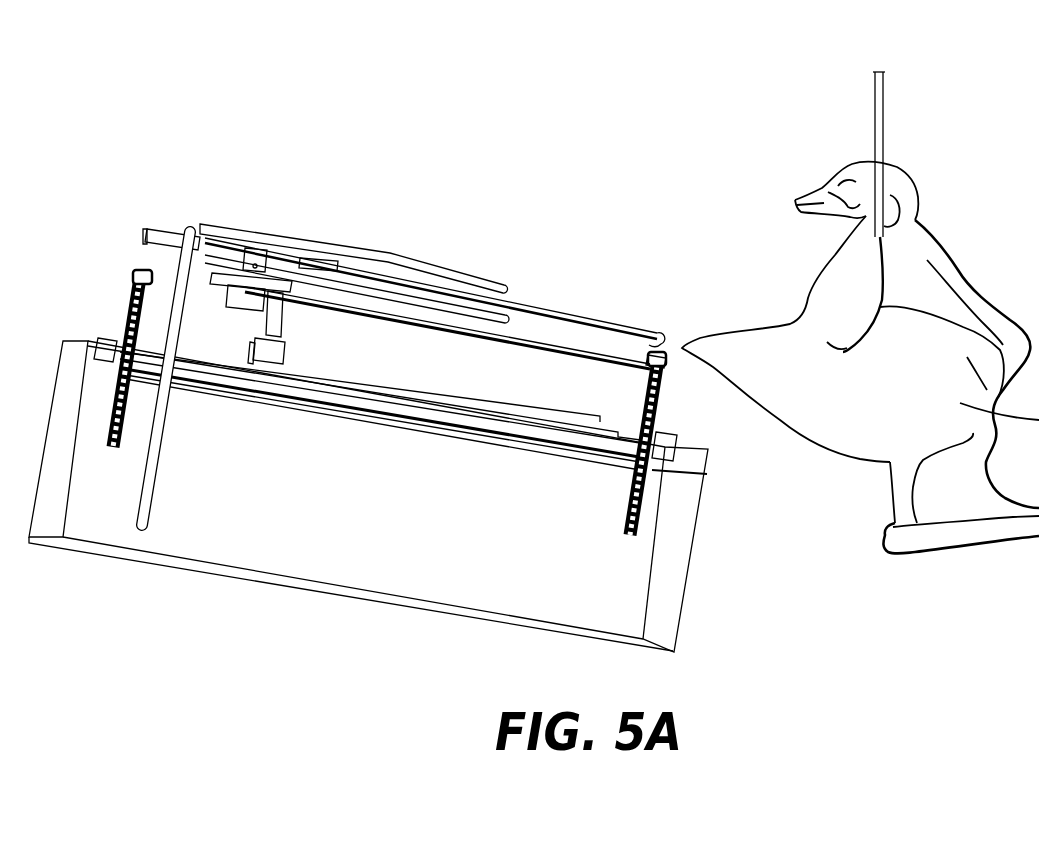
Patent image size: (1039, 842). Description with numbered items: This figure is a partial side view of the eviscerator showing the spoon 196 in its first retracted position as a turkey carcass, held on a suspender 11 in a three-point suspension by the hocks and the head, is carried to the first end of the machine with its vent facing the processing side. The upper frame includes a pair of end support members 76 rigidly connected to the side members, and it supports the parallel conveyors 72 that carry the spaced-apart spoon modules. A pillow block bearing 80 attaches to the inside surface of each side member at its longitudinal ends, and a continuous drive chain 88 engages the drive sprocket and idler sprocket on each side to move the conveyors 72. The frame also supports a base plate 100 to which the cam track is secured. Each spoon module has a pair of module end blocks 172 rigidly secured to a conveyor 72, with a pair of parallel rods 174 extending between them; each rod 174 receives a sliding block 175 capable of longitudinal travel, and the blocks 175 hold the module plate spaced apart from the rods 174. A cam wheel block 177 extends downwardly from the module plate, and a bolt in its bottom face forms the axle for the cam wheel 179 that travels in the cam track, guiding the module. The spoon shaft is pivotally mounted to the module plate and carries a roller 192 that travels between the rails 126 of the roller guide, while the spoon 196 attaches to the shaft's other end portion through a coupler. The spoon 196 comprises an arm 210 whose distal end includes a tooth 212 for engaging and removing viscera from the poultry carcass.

The suspender 11 is at (887, 117).
The conveyor 72 is at (612, 477).
The end support member 76 is at (670, 577).
The pillow block bearing 80 is at (660, 452).
The continuous drive chain 88 is at (622, 512).
The base plate 100 is at (478, 422).
The rail 126 is at (348, 247).
The module end block 172 is at (666, 363).
The rod 174 is at (533, 352).
The sliding block 175 is at (238, 296).
The cam wheel block 177 is at (278, 322).
The cam wheel 179 is at (278, 352).
The roller 192 is at (158, 228).
The spoon 196 is at (460, 291).
The arm 210 is at (574, 312).
The tooth 212 is at (651, 347).